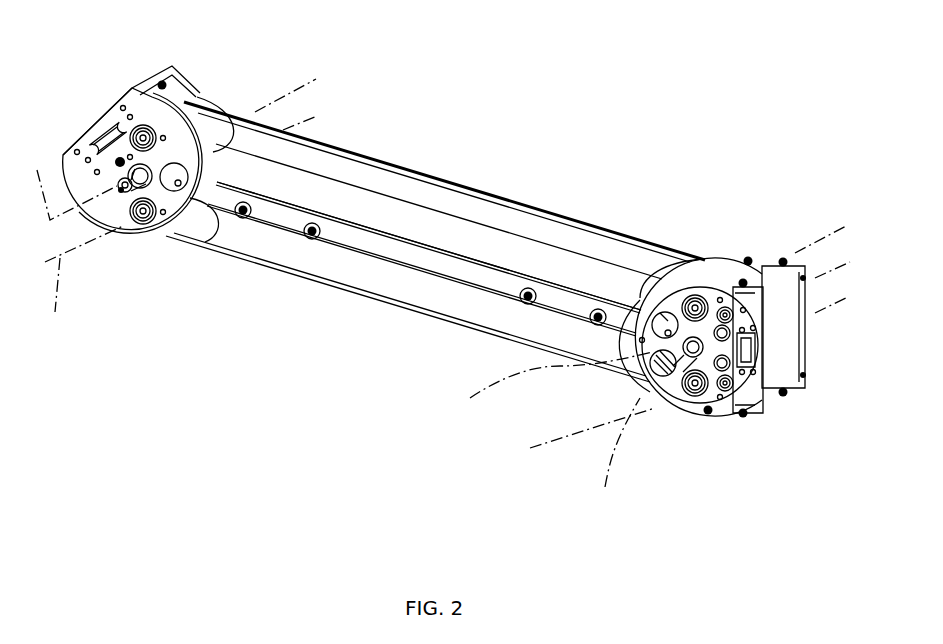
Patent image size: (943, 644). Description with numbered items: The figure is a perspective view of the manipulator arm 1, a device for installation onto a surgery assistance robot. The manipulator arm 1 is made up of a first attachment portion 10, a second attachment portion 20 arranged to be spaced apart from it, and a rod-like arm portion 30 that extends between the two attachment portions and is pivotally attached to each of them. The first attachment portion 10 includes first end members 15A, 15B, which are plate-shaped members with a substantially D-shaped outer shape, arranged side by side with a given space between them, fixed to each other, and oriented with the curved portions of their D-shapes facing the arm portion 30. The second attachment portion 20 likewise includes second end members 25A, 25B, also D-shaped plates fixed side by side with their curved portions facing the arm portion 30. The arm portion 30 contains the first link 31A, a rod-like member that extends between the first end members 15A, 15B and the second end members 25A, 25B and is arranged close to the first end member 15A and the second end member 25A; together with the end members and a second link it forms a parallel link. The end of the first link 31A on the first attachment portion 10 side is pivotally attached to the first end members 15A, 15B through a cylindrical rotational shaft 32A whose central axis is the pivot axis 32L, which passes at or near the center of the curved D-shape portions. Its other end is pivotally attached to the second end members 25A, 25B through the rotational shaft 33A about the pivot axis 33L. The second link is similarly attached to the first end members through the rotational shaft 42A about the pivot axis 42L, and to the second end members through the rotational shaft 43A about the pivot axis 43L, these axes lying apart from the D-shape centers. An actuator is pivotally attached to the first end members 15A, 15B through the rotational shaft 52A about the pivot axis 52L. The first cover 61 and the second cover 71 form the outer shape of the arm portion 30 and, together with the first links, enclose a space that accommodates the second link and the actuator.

The manipulator arm 1 is at (731, 59).
The first attachment portion 10 is at (702, 522).
The second attachment portion 20 is at (128, 350).
The arm portion 30 is at (413, 440).
The first end member 15A is at (742, 408).
The first end member 15B is at (770, 265).
The second end member 25A is at (131, 90).
The second end member 25B is at (178, 72).
The first link 31A is at (418, 258).
The rotational shaft 32A is at (755, 357).
The pivot axis 32L is at (570, 438).
The rotational shaft 33A is at (100, 150).
The pivot axis 33L is at (60, 182).
The rotational shaft 42A is at (695, 400).
The pivot axis 42L is at (614, 455).
The rotational shaft 43A is at (140, 225).
The pivot axis 43L is at (80, 284).
The rotational shaft 52A is at (667, 298).
The pivot axis 52L is at (540, 383).
The first cover 61 is at (445, 197).
The second cover 71 is at (297, 263).